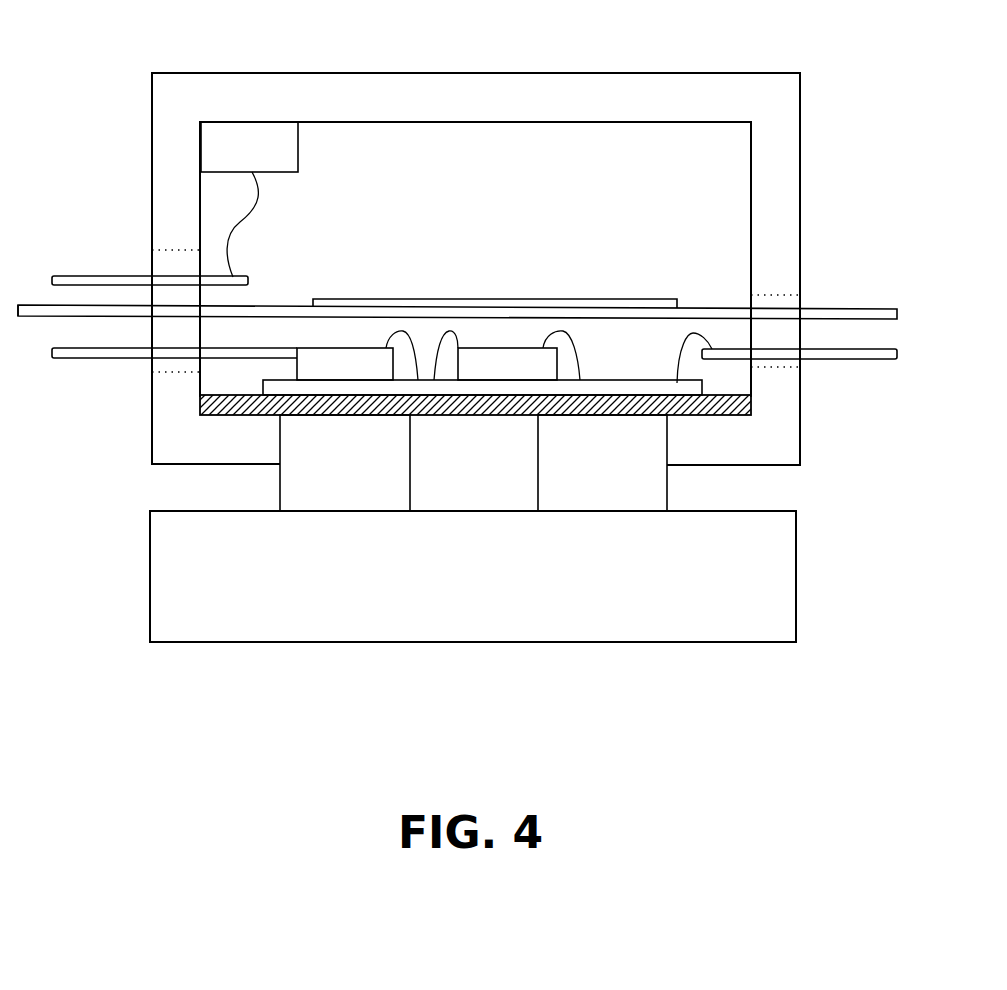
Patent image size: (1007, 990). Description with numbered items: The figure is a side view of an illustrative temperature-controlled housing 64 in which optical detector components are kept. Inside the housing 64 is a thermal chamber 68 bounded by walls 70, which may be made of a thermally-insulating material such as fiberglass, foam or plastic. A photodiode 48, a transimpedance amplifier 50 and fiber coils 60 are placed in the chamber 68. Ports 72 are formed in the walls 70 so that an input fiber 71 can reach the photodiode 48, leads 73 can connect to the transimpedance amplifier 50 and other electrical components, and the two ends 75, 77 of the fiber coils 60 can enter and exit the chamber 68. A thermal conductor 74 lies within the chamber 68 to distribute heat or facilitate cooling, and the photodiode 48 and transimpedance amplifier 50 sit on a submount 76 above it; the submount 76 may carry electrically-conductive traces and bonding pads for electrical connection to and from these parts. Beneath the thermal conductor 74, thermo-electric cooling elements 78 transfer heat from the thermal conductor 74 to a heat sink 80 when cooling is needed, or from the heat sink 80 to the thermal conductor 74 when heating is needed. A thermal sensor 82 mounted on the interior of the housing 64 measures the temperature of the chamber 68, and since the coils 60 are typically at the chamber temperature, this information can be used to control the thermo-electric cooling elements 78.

The housing 64 is at (70, 90).
The thermal chamber 68 is at (378, 187).
The walls 70 is at (167, 188).
The ports 72 is at (150, 267).
The leads 73 is at (68, 273).
The end of fiber coils 77 is at (883, 300).
The end of fiber coils 75 is at (40, 317).
The input fiber 71 is at (83, 358).
The coils 60 is at (592, 303).
The photodiode 48 is at (377, 355).
The transimpedance amplifier 50 is at (585, 357).
The submount 76 is at (597, 388).
The thermal conductor 74 is at (222, 417).
The thermo-electric cooling elements 78 is at (473, 463).
The heat sink 80 is at (473, 576).
The thermal sensor 82 is at (249, 199).